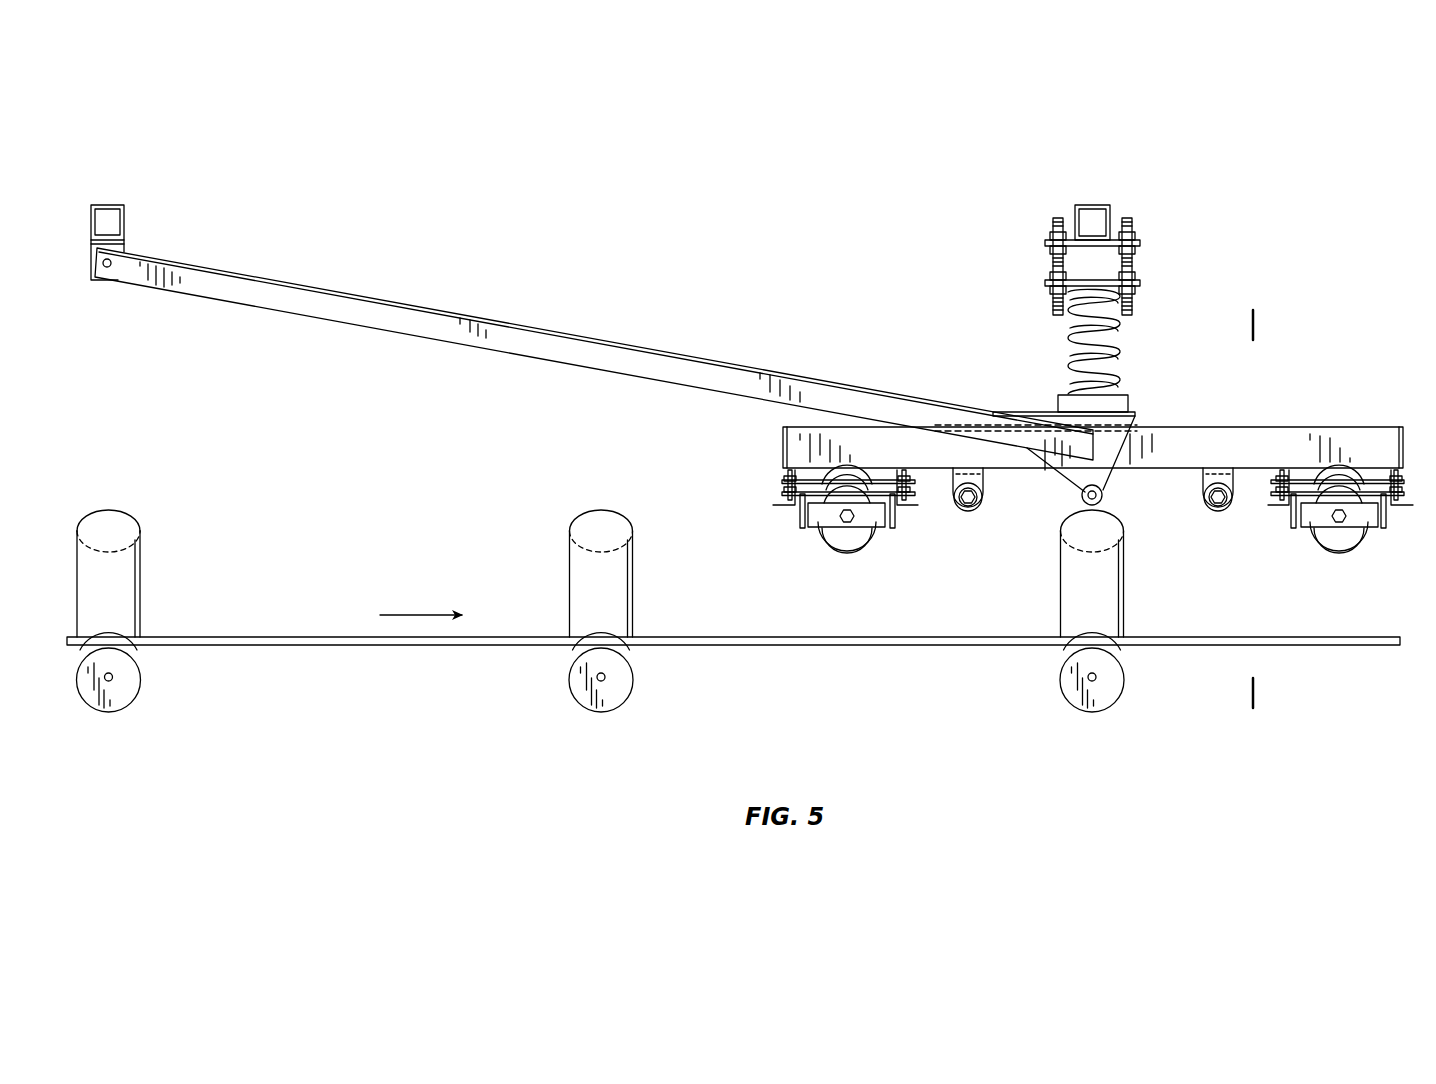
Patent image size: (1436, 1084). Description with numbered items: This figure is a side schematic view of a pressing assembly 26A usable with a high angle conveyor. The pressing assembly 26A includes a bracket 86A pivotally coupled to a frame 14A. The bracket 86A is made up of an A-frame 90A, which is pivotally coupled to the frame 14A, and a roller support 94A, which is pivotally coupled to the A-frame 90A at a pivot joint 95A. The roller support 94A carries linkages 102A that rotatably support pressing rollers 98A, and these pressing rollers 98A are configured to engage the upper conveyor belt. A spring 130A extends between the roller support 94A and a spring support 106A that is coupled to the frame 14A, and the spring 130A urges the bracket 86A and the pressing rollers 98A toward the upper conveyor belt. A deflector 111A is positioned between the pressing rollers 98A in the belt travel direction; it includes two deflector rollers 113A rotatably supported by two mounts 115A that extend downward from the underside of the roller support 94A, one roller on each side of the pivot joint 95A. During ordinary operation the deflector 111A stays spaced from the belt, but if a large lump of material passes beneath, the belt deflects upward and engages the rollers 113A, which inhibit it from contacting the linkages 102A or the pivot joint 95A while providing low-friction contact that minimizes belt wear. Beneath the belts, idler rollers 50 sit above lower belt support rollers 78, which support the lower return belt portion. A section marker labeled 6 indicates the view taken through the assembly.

The frame 14A is at (146, 220).
The bracket 86A is at (525, 248).
The A-frame 90A is at (641, 346).
The spring support 106A is at (1152, 243).
The pressing assembly 26A is at (1280, 255).
The spring 130A is at (1120, 358).
The deflector mounts 115A is at (946, 476).
The roller support 94A is at (1170, 440).
The section line 6 is at (1262, 325).
The idler rollers 50 is at (122, 512).
The lower belt support rollers 78 is at (128, 695).
The linkages 102A is at (778, 520).
The pressing rollers 98A is at (822, 550).
The deflector 111A is at (955, 534).
The deflector rollers 113A is at (985, 514).
The pivot joint 95A is at (1105, 505).